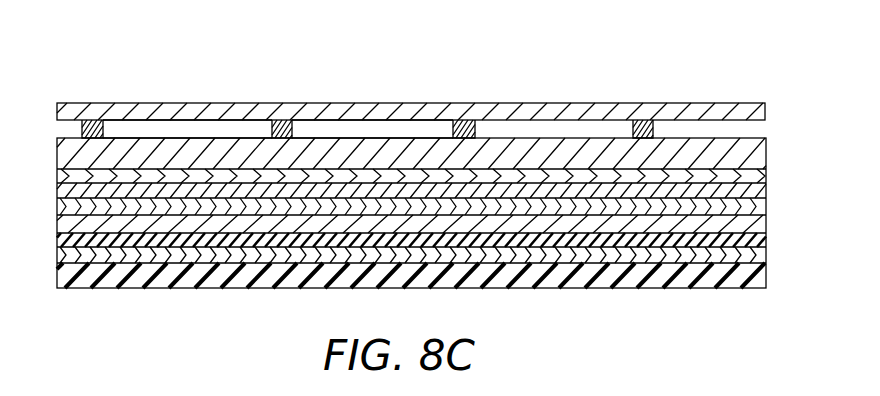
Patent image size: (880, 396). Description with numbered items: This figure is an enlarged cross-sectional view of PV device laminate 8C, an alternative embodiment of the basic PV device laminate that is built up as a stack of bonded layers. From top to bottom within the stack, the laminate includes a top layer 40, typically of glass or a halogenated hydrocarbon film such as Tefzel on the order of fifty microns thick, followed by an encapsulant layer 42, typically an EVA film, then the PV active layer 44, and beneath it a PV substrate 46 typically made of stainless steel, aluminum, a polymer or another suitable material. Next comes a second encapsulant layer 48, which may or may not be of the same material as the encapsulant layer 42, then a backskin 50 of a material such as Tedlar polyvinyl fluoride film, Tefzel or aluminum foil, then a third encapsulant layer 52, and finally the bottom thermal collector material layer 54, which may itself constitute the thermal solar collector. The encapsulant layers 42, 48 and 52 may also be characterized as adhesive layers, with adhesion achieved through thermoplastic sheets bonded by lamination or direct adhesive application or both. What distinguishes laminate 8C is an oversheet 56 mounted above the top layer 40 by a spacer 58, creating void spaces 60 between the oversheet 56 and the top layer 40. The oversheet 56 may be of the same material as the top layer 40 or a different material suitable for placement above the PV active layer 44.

The top layer 40 is at (767, 138).
The encapsulant layer 42 is at (766, 168).
The PV active layer 44 is at (767, 190).
The PV substrate 46 is at (767, 203).
The second encapsulant layer 48 is at (767, 221).
The backskin 50 is at (767, 240).
The third encapsulant layer 52 is at (767, 258).
The thermal collector material layer 54 is at (768, 284).
The oversheet 56 is at (148, 103).
The spacer 58 is at (467, 120).
The void spaces 60 is at (215, 130).
The PV device laminate 8C is at (595, 78).